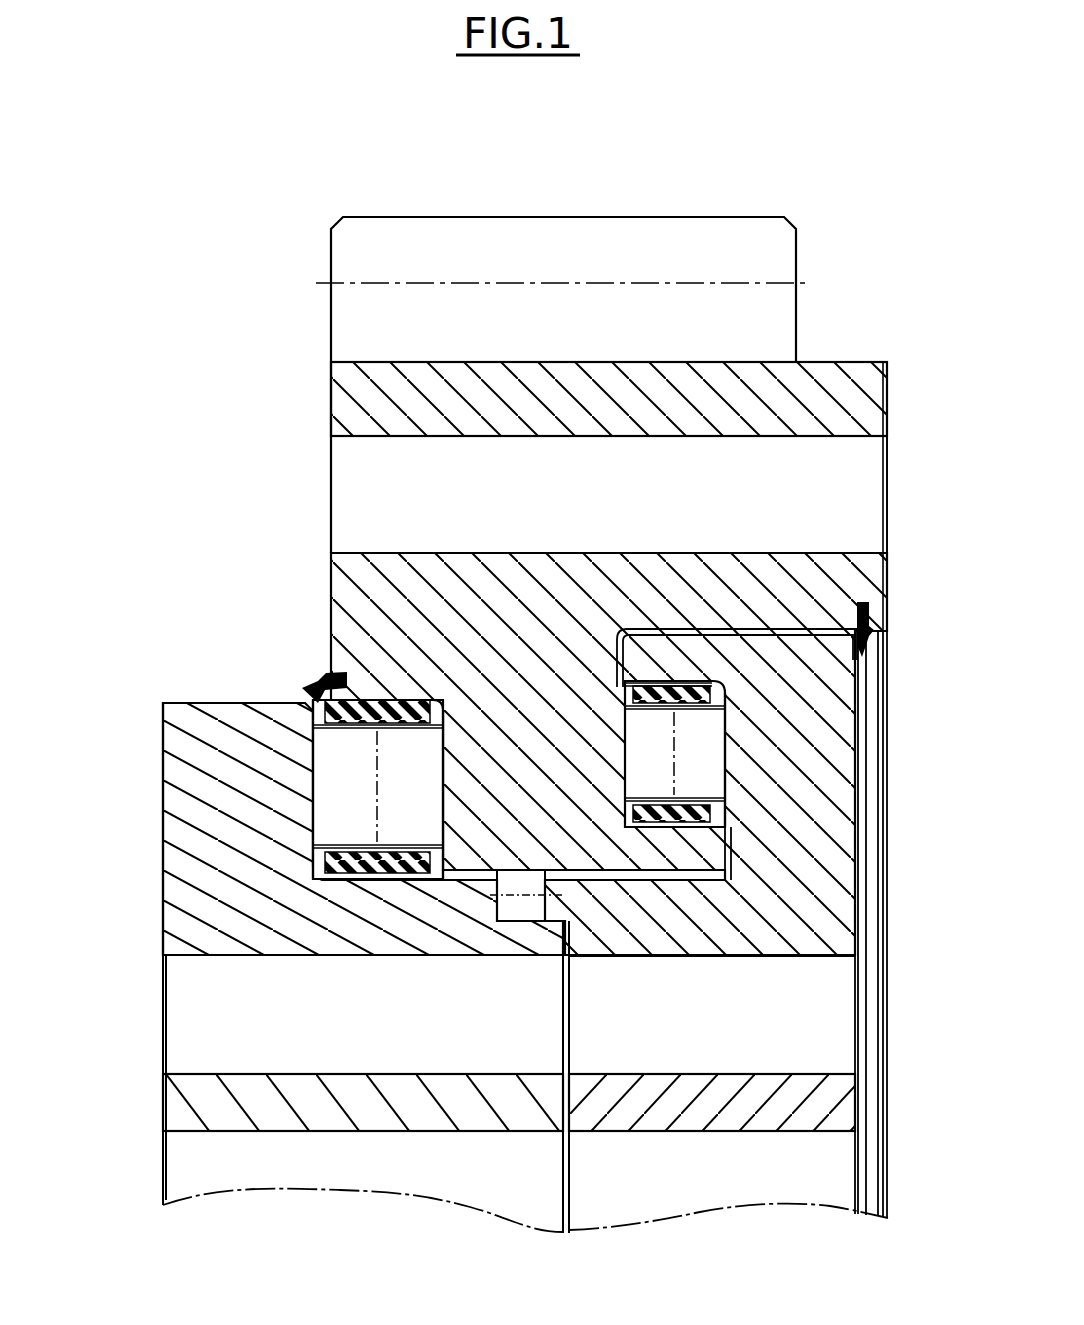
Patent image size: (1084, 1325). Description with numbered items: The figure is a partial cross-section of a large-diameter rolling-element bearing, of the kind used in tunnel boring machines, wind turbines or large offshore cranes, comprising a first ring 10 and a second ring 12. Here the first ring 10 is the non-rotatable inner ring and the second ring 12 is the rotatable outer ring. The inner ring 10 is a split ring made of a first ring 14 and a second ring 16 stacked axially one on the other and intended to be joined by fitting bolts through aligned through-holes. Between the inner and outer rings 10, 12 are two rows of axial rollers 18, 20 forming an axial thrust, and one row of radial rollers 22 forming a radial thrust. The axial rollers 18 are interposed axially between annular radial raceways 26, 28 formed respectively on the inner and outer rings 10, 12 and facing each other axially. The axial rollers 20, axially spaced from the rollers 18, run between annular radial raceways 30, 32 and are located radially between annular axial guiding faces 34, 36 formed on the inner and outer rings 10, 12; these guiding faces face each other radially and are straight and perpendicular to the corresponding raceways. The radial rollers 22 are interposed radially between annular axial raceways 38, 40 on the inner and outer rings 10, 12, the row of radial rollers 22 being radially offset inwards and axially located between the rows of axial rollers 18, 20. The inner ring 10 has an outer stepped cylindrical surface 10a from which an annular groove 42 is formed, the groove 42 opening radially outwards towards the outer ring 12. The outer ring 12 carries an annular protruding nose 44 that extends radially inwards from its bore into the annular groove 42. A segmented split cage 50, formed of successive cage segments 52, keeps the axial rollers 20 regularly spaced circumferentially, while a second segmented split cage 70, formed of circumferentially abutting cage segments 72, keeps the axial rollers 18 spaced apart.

The first ring 10 is at (150, 772).
The outer stepped cylindrical surface 10a is at (212, 702).
The second ring 12 is at (559, 586).
The first ring 14 is at (162, 912).
The second ring 16 is at (862, 918).
The axial rollers 18 is at (264, 741).
The axial rollers 20 is at (772, 674).
The radial rollers 22 is at (540, 890).
The annular radial raceway 26 is at (332, 772).
The annular radial raceway 28 is at (443, 803).
The annular radial raceway 30 is at (712, 777).
The annular radial raceway 32 is at (722, 769).
The annular axial guiding face 34 is at (715, 702).
The annular axial guiding face 36 is at (705, 800).
The annular axial raceway 38 is at (537, 905).
The annular axial raceway 40 is at (497, 908).
The annular groove 42 is at (634, 872).
The annular protruding nose 44 is at (520, 735).
The cage 50 is at (688, 680).
The cage segments 52 is at (622, 687).
The cage 70 is at (300, 682).
The cage segments 72 is at (376, 698).